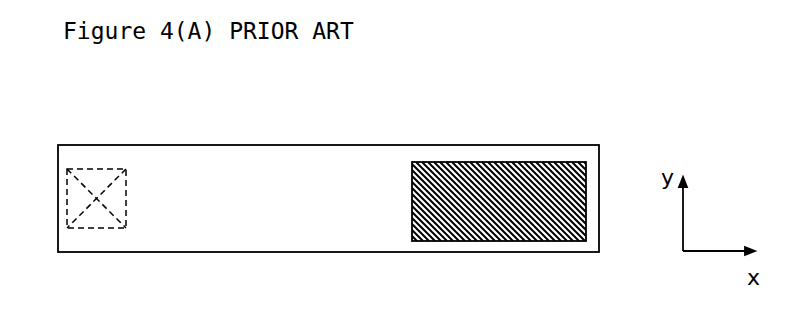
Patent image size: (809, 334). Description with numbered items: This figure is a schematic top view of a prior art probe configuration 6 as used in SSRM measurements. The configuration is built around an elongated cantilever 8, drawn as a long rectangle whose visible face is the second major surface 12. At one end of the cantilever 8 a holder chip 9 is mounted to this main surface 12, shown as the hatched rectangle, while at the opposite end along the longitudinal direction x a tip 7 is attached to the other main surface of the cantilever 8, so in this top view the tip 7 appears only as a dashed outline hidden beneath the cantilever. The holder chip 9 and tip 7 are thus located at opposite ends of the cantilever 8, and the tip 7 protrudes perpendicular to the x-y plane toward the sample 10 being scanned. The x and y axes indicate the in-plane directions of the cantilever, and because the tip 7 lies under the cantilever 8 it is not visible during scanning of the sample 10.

The probe configuration 6 is at (614, 100).
The tip 7 is at (88, 170).
The cantilever 8 is at (275, 172).
The holder chip 9 is at (508, 165).
The sample 10 is at (577, 310).
The 2nd major surface cantilever 12 is at (320, 227).